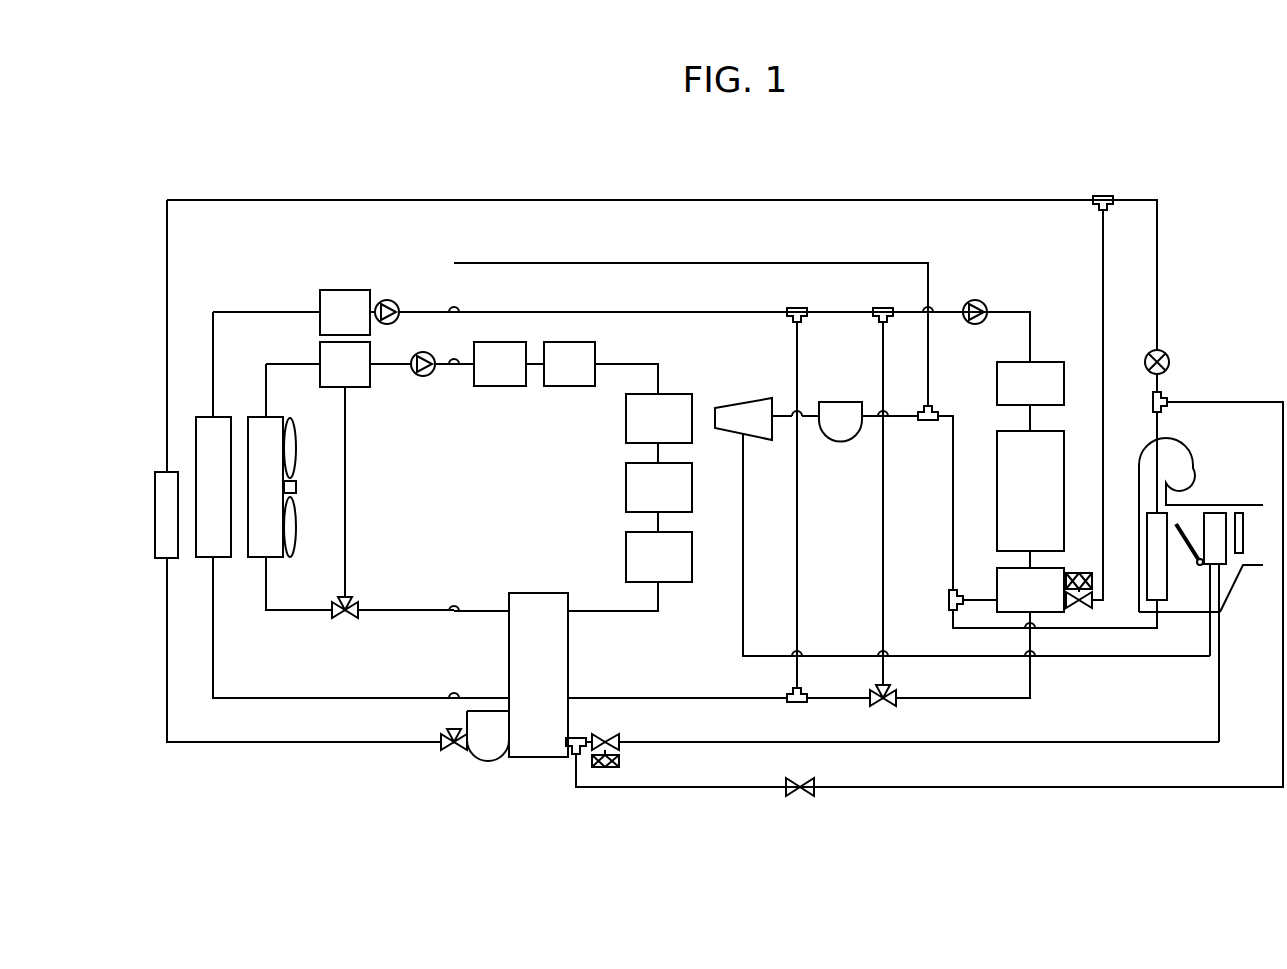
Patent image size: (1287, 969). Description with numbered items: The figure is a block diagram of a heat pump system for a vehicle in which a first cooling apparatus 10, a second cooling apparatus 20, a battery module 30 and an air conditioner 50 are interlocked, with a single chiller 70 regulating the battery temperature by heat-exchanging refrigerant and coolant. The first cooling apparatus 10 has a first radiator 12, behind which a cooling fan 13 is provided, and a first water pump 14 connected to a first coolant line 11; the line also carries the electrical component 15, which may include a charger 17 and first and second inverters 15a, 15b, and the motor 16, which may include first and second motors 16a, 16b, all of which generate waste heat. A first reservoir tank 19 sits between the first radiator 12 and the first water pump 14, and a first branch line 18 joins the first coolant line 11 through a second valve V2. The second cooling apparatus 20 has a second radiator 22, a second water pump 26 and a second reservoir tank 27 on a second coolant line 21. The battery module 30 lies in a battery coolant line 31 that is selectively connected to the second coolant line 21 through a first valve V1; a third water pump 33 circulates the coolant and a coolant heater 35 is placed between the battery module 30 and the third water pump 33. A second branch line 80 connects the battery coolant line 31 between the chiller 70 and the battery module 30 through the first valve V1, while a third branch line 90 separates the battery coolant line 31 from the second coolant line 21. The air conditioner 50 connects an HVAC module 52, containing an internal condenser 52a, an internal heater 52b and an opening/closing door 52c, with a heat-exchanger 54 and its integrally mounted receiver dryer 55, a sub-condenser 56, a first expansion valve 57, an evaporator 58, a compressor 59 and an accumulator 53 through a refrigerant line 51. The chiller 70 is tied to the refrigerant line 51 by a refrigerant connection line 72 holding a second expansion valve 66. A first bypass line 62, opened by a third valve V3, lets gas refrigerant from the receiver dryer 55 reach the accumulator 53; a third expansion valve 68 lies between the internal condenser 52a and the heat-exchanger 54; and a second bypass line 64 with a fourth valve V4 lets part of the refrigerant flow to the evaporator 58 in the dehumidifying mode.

The first cooling apparatus 10 is at (270, 630).
The first coolant line 11 is at (311, 609).
The first radiator 12 is at (258, 417).
The cooling fan 13 is at (297, 487).
The first water pump 14 is at (423, 376).
The electrical component 15 is at (540, 405).
The first inverter 15a is at (500, 386).
The second inverter 15b is at (567, 388).
The motor 16 is at (616, 522).
The first motor 16a is at (626, 488).
The second motor 16b is at (630, 557).
The charger 17 is at (626, 419).
The first branch line 18 is at (346, 490).
The first reservoir tank 19 is at (333, 387).
The second cooling apparatus 20 is at (270, 272).
The second coolant line 21 is at (230, 312).
The second radiator 22 is at (205, 417).
The second water pump 26 is at (388, 300).
The second reservoir tank 27 is at (345, 290).
The battery module 30 is at (997, 492).
The battery coolant line 31 is at (1030, 335).
The third water pump 33 is at (975, 300).
The coolant heater 35 is at (997, 382).
The air conditioner 50 is at (1150, 185).
The refrigerant line 51 is at (553, 198).
The HVAC module 52 is at (1209, 576).
The internal condenser 52a is at (1215, 513).
The internal heater 52b is at (1240, 513).
The opening/closing door 52c is at (1193, 566).
The accumulator 53 is at (840, 447).
The heat-exchanger 54 is at (588, 644).
The receiver dryer 55 is at (488, 762).
The sub-condenser 56 is at (155, 515).
The first expansion valve 57 is at (1170, 362).
The evaporator 58 is at (1147, 530).
The compressor 59 is at (744, 402).
The first bypass line 62 is at (668, 263).
The second bypass line 64 is at (1103, 790).
The second expansion valve 66 is at (1084, 572).
The third expansion valve 68 is at (620, 761).
The chiller 70 is at (992, 565).
The refrigerant connection line 72 is at (1103, 273).
The second branch line 80 is at (883, 366).
The third branch line 90 is at (797, 366).
The first valve V1 is at (888, 706).
The second valve V2 is at (343, 620).
The third valve V3 is at (448, 752).
The fourth valve V4 is at (800, 796).